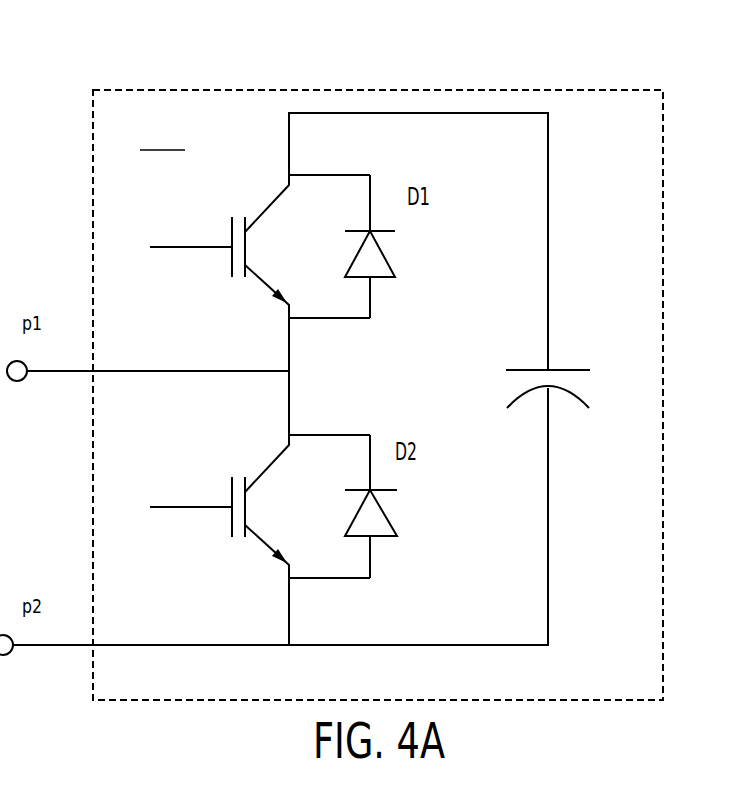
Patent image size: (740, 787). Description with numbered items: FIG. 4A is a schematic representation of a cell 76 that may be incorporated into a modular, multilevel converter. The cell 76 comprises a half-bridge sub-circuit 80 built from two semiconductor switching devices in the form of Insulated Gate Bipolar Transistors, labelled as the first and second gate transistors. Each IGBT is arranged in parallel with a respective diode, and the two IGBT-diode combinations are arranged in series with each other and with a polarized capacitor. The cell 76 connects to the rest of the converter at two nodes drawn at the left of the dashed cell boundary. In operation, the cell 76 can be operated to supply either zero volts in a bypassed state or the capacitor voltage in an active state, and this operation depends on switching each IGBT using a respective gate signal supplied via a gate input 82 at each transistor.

The cell 76 is at (186, 72).
The half-bridge sub-circuit 80 is at (656, 232).
The gate input 82 is at (181, 276).